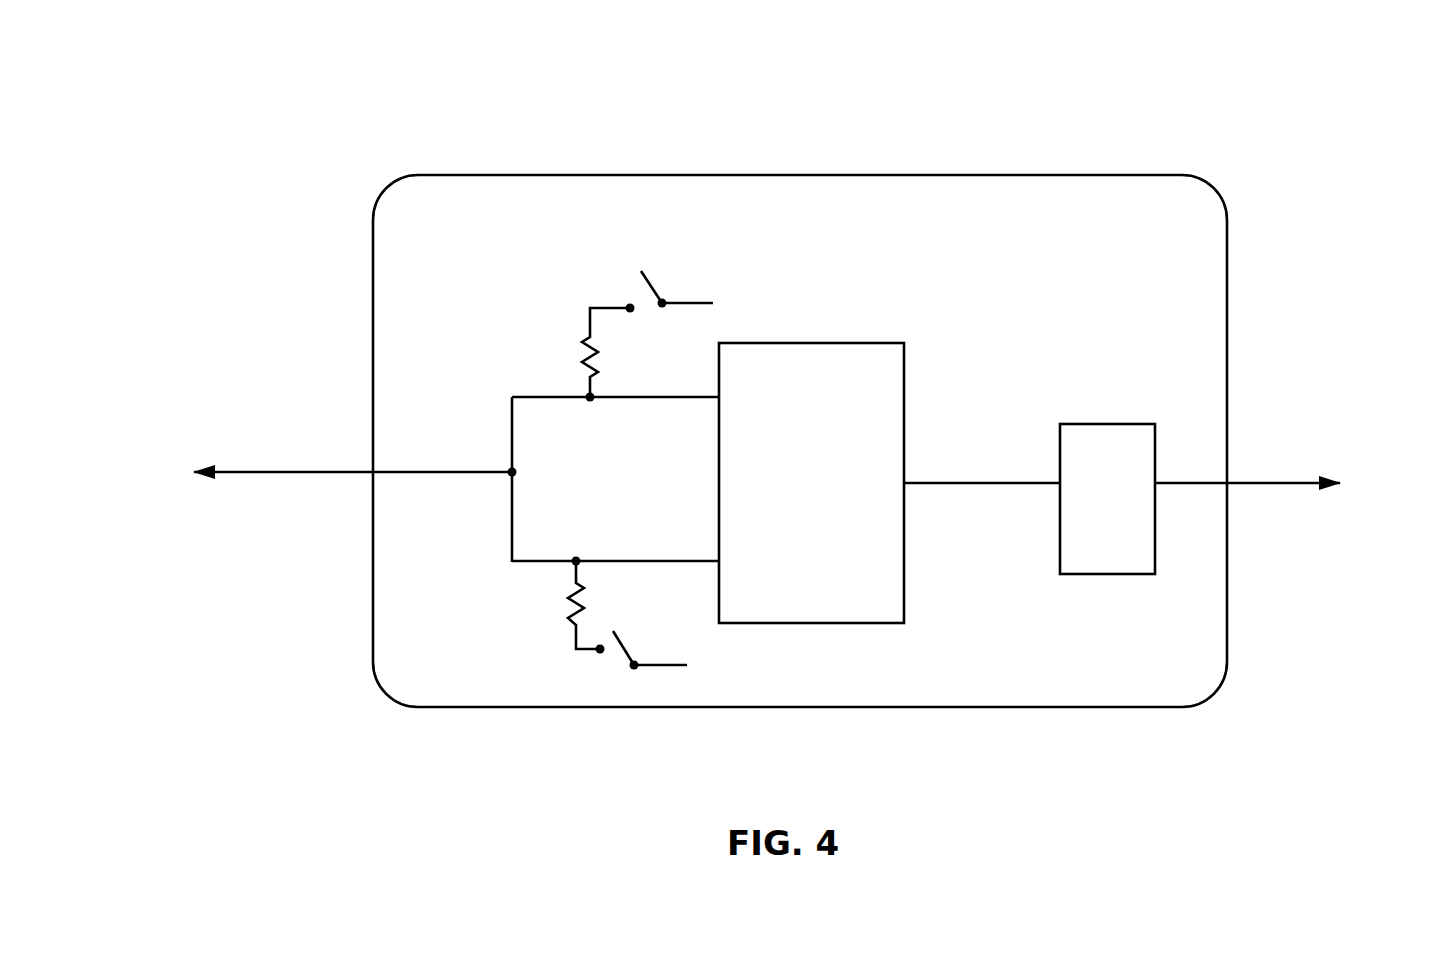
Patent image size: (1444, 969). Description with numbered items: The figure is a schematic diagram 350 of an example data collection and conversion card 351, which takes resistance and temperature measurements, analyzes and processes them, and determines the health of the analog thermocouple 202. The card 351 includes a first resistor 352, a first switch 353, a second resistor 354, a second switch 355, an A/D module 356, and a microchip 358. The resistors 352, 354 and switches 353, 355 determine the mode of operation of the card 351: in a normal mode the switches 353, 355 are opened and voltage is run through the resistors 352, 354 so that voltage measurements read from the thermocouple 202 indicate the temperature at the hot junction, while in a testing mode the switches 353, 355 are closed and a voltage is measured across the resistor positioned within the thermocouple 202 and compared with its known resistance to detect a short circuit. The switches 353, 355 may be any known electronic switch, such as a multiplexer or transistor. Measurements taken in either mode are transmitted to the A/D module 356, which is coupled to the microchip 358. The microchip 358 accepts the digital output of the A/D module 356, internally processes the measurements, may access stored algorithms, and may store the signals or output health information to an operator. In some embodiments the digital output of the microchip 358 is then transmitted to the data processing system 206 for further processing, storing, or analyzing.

The schematic diagram 350 is at (312, 119).
The data collection and conversion card 351 is at (437, 225).
The first resistor 352 is at (579, 353).
The first switch 353 is at (688, 303).
The second resistor 354 is at (573, 620).
The second switch 355 is at (643, 667).
The A/D module 356 is at (789, 541).
The microchip 358 is at (1086, 541).
The analog thermocouple 202 is at (302, 503).
The data processing system 206 is at (1293, 525).